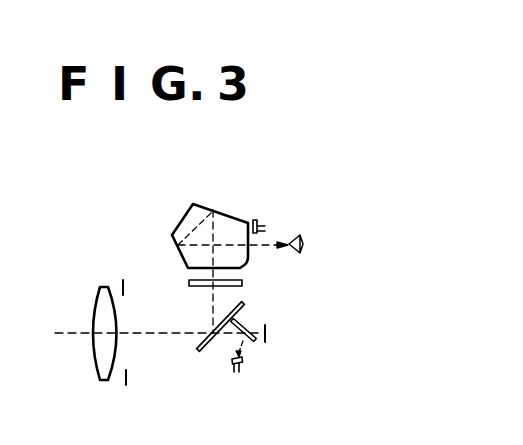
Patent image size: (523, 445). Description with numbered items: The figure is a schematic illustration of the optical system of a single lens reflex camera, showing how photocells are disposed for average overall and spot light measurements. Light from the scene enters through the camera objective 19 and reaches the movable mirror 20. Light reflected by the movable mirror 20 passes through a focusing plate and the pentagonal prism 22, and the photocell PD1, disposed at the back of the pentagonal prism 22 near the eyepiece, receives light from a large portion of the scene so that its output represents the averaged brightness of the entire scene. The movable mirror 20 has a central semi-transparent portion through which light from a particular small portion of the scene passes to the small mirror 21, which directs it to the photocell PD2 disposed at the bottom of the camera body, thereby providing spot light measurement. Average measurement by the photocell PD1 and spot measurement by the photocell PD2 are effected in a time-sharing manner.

The camera objective 19 is at (98, 300).
The movable mirror 20 is at (208, 350).
The small mirror 21 is at (243, 323).
The pentagonal prism 22 is at (223, 212).
The photocell PD1 is at (256, 221).
The photocell PD2 is at (243, 364).